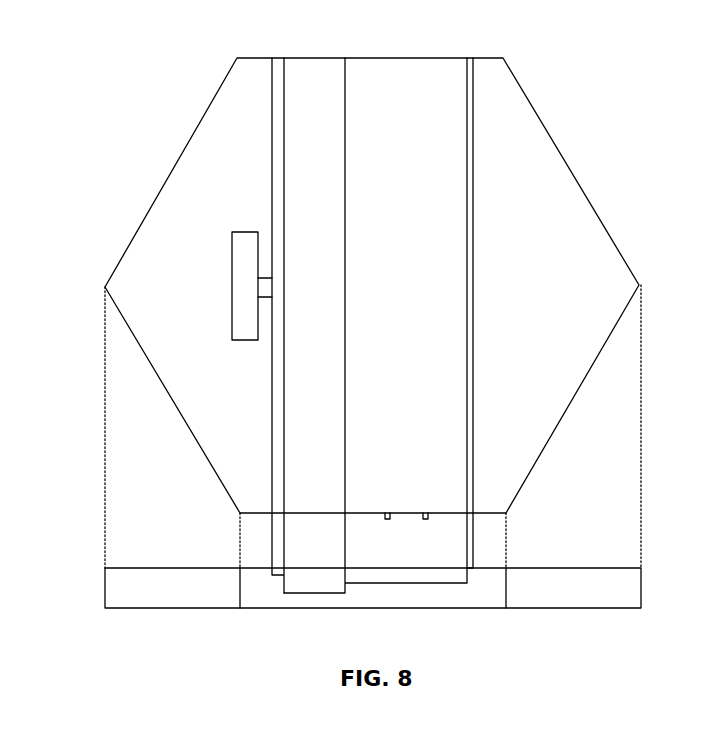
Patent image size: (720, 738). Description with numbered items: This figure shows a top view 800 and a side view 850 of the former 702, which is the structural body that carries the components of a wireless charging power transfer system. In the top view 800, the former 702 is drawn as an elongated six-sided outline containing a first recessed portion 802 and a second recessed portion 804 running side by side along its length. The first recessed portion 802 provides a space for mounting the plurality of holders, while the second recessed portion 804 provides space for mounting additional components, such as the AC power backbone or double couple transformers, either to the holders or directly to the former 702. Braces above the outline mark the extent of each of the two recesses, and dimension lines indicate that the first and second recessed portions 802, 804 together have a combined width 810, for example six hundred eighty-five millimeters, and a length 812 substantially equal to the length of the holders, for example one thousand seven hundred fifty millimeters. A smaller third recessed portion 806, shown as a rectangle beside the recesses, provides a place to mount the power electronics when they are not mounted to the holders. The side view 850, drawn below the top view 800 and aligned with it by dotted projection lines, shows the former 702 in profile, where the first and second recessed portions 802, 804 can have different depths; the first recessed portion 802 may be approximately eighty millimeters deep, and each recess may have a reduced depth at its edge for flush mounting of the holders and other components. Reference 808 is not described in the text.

The top view 800 is at (116, 62).
The former 702 is at (545, 155).
The first recessed portion 802 is at (346, 45).
The second recessed portion 804 is at (343, 45).
The third recessed portion 806 is at (248, 232).
The gap thickness 808 is at (377, 557).
The combined width 810 is at (473, 542).
The length 812 is at (503, 58).
The side view 850 is at (116, 532).